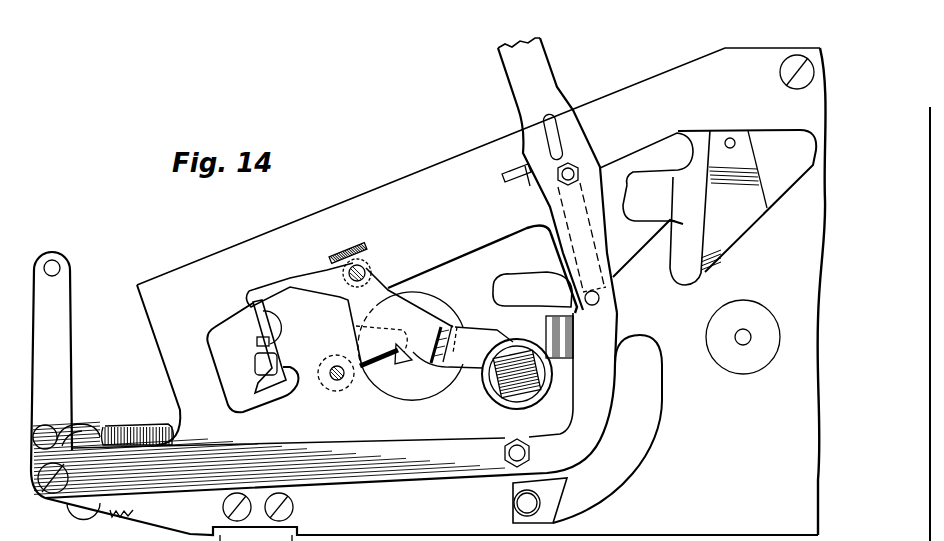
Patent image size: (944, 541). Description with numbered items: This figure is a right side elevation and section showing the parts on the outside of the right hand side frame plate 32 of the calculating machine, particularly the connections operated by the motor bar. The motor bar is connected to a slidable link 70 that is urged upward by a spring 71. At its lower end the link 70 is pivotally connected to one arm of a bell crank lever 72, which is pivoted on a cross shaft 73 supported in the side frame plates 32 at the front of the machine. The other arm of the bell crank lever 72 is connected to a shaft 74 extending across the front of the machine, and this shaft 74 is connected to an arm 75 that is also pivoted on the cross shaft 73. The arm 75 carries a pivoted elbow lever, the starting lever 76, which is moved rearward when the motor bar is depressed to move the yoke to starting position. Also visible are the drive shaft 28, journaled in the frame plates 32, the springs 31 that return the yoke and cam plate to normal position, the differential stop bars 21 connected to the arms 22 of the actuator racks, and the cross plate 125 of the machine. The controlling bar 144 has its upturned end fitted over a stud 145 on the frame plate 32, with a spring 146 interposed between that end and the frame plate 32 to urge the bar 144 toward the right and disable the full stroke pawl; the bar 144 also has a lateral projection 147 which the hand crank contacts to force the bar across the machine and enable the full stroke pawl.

The slidable link 70 is at (543, 70).
The frame plate 32 is at (425, 173).
The differential stop bar 21 is at (696, 143).
The arm 22 is at (712, 218).
The spring 71 is at (573, 261).
The projection 147 is at (472, 333).
The stud 145 is at (370, 262).
The spring 146 is at (358, 297).
The cross plate 125 is at (261, 320).
The controlling bar 144 is at (380, 358).
The drive shaft 28 is at (504, 387).
The bell crank lever 72 is at (330, 447).
The arm 75 is at (62, 333).
The starting lever 76 is at (170, 414).
The shaft 74 is at (48, 436).
The spring 31 is at (143, 426).
The cross shaft 73 is at (48, 497).